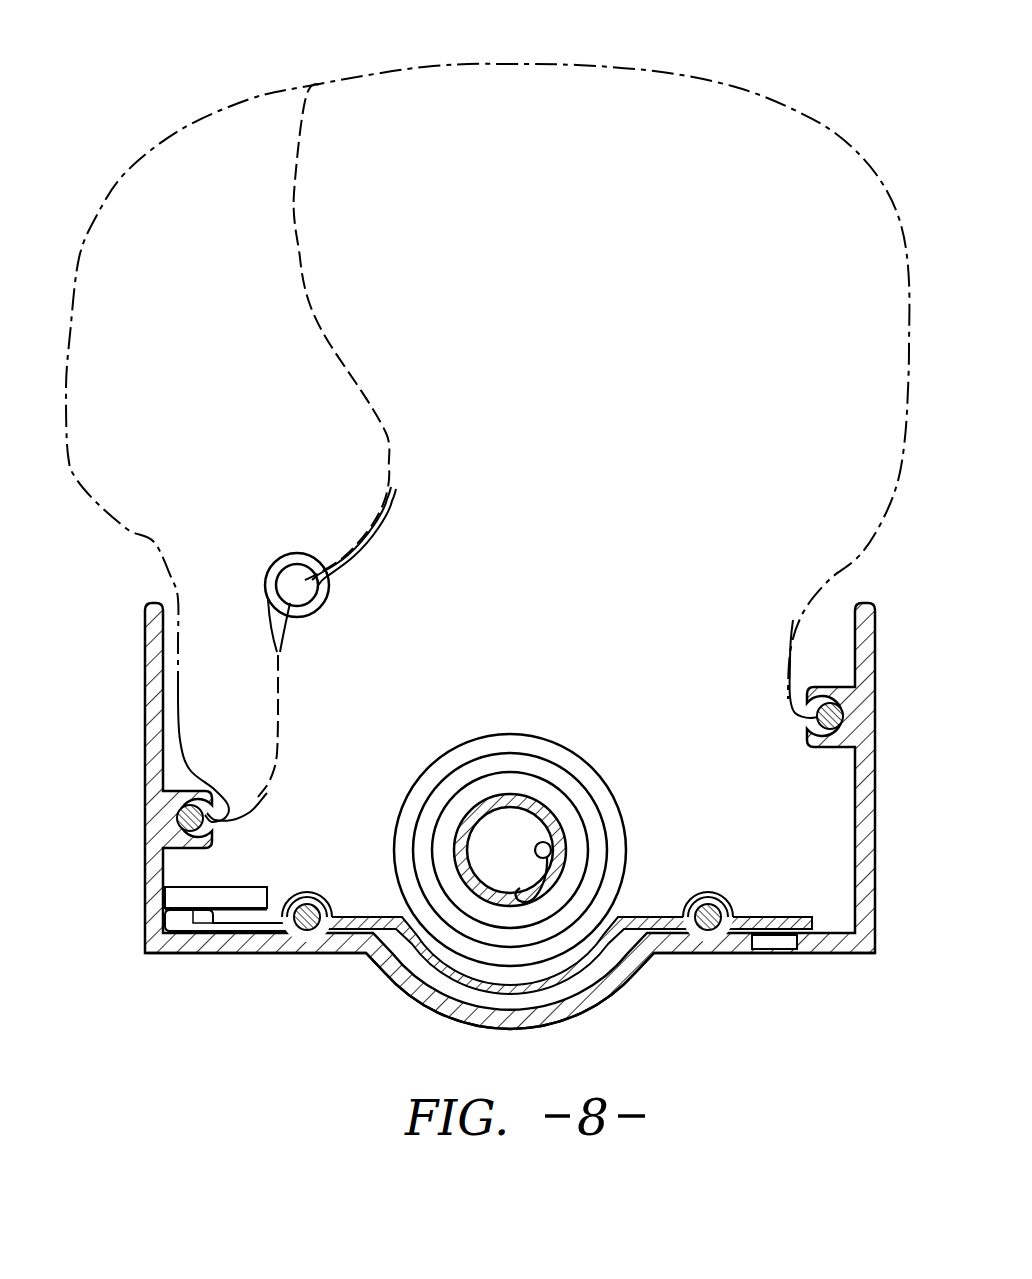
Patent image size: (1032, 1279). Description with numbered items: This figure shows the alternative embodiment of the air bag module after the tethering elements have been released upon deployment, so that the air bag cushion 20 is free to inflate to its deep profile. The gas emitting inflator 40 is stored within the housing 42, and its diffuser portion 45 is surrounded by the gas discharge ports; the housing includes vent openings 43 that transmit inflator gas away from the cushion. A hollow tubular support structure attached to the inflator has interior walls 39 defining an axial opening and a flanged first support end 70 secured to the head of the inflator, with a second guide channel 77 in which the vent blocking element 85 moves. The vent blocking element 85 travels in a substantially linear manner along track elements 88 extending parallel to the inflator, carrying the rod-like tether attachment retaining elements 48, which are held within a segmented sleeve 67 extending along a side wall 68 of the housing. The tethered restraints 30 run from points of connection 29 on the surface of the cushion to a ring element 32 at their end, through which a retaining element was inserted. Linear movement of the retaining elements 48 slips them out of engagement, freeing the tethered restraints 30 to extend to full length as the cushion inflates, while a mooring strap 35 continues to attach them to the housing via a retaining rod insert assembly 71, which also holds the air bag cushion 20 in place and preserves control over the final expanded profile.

The air bag cushion 20 is at (790, 103).
The points of connection 29 is at (320, 86).
The tethered restraints 30 is at (388, 497).
The ring element 32 is at (326, 600).
The mooring strap 35 is at (280, 723).
The side wall 68 is at (148, 662).
The retaining rod insert assembly 71 is at (176, 826).
The segmented sleeve 67 is at (193, 887).
The tether attachment retaining elements 48 is at (200, 933).
The track elements 88 is at (298, 940).
The vent blocking element 85 is at (764, 912).
The vent openings 43 is at (790, 944).
The housing 42 is at (843, 953).
The diffuser portion 45 is at (552, 758).
The gas emitting inflator 40 is at (605, 784).
The first support end 70 is at (573, 831).
The interior walls 39 is at (557, 864).
The second guide channel 77 is at (550, 907).